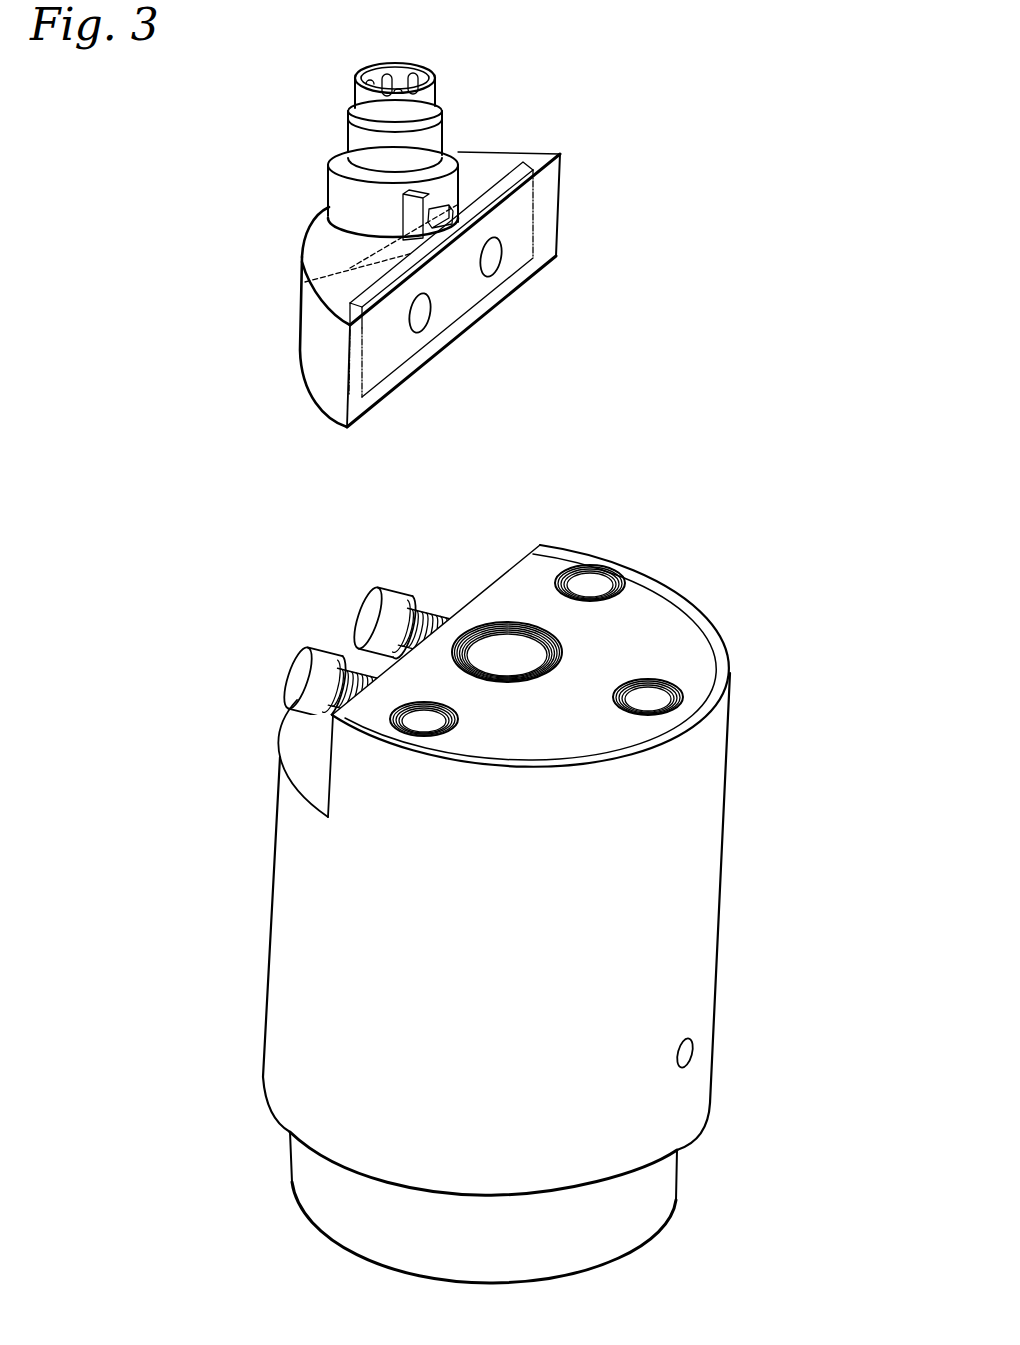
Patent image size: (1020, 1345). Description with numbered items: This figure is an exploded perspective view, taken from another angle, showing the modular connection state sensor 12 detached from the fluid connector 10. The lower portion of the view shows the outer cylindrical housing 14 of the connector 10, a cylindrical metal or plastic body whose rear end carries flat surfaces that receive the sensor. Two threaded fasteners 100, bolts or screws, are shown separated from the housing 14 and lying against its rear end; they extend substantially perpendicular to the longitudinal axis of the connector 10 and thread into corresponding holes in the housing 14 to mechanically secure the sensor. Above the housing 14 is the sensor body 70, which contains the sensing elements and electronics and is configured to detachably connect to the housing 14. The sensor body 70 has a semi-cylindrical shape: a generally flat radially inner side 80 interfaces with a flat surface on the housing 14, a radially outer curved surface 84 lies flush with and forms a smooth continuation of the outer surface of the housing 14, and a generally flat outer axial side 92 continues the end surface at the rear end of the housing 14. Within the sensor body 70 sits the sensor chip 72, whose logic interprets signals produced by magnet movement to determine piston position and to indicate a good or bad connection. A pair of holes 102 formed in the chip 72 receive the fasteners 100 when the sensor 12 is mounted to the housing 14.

The fluid connector 10 is at (784, 985).
The modular connection state sensor 12 is at (663, 156).
The outer cylindrical housing 14 is at (304, 1041).
The sensor body 70 is at (295, 206).
The sensor chip 72 is at (398, 375).
The radially inner side 80 is at (548, 177).
The radially outer curved surface 84 is at (310, 330).
The outer axial side 92 is at (487, 160).
The threaded fasteners 100 is at (363, 597).
The holes 102 is at (499, 262).